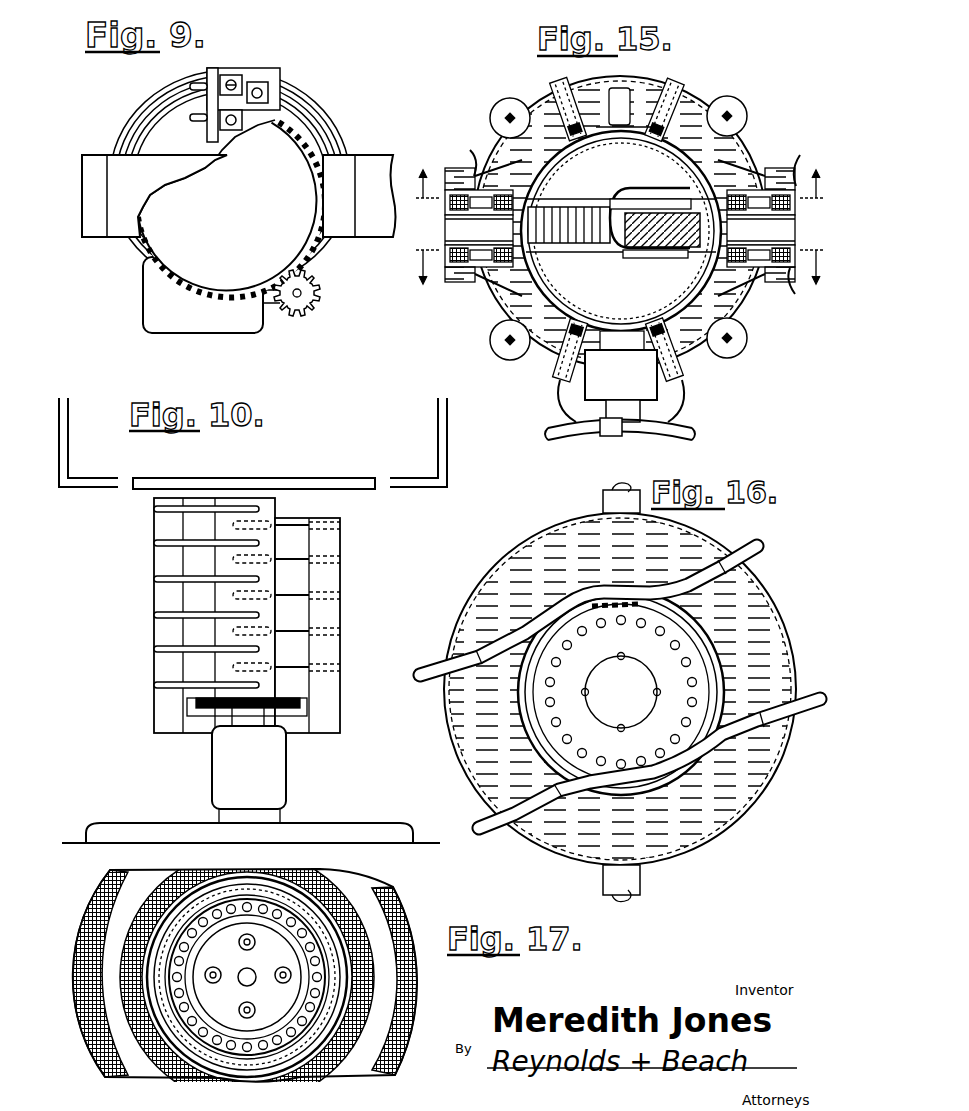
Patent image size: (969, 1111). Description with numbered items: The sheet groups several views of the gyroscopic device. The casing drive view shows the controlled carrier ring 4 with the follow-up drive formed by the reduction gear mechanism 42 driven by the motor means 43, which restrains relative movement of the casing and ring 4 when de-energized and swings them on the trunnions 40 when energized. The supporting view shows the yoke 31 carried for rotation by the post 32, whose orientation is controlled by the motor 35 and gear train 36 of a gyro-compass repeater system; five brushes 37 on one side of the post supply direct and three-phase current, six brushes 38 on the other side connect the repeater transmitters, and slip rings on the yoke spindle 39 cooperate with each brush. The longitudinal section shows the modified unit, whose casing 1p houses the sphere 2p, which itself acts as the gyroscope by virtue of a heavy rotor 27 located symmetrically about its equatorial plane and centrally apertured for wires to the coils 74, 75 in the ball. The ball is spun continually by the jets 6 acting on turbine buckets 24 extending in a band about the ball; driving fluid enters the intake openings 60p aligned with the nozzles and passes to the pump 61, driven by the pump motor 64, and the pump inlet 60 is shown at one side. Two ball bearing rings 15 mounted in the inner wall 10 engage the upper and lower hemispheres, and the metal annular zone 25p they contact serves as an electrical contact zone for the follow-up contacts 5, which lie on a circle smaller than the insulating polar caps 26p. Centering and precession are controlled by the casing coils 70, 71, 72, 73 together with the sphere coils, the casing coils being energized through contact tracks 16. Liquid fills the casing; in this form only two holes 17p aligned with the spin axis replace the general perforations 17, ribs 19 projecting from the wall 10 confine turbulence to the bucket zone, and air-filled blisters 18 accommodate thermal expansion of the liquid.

In FIG. 9, the ring 4 is at (239, 196).
In FIG. 9, the reduction gear mechanism 42 is at (320, 291).
In FIG. 9, the motor means 43 is at (214, 295).
In FIG. 10, the yoke 31 is at (72, 452).
In FIG. 10, the post 32 is at (290, 490).
In FIG. 10, the motor 35 is at (249, 767).
In FIG. 10, the gear train 36 is at (262, 712).
In FIG. 10, the brushes 37 is at (330, 614).
In FIG. 10, the brushes 38 is at (158, 593).
In FIG. 10, the yoke spindle 39 is at (233, 632).
In FIG. 16, the housing 1' 1p is at (467, 770).
In FIG. 15, the sphere 2p is at (621, 231).
In FIG. 16, the sphere 2p is at (629, 782).
In FIG. 15, the contact members 5 is at (672, 78).
In FIG. 17, the contact members 5 is at (240, 1008).
In FIG. 15, the jets 6 is at (468, 286).
In FIG. 16, the jets 6 is at (552, 794).
In FIG. 15, the inner wall 10 is at (572, 320).
In FIG. 17, the inner wall 10 is at (255, 981).
In FIG. 15, the ball bearing rings 15 is at (726, 312).
In FIG. 16, the ball bearing rings 15 is at (672, 656).
In FIG. 17, the ball bearing rings 15 is at (305, 993).
In FIG. 15, the contact rings or tracks 16 is at (623, 223).
In FIG. 15, the perforations 17 is at (621, 227).
In FIG. 15, the holes 17p is at (624, 219).
In FIG. 17, the holes 17p is at (220, 1000).
In FIG. 15, the blisters 18 is at (765, 346).
In FIG. 15, the ribs 19 is at (553, 199).
In FIG. 15, the turbine buckets 24 is at (576, 226).
In FIG. 16, the turbine buckets 24 is at (592, 598).
In FIG. 15, the annular zone 25p is at (629, 230).
In FIG. 16, the annular zone 25p is at (621, 692).
In FIG. 15, the caps 26p is at (598, 308).
In FIG. 16, the caps 26p is at (621, 692).
In FIG. 15, the rotor 27 is at (628, 250).
In FIG. 16, the trunnions 40 is at (603, 890).
In FIG. 15, the foot bar 60 is at (685, 443).
In FIG. 16, the intake openings 60p is at (762, 716).
In FIG. 15, the pump 61 is at (642, 410).
In FIG. 15, the pump motor 64 is at (621, 375).
In FIG. 15, the coil 70 is at (514, 198).
In FIG. 17, the coil 70 is at (412, 1004).
In FIG. 15, the coil 71 is at (746, 196).
In FIG. 17, the coil 71 is at (90, 917).
In FIG. 15, the coil 72 is at (515, 275).
In FIG. 15, the coil 73 is at (724, 284).
In FIG. 15, the coil 74 is at (705, 178).
In FIG. 15, the coil 75 is at (700, 262).